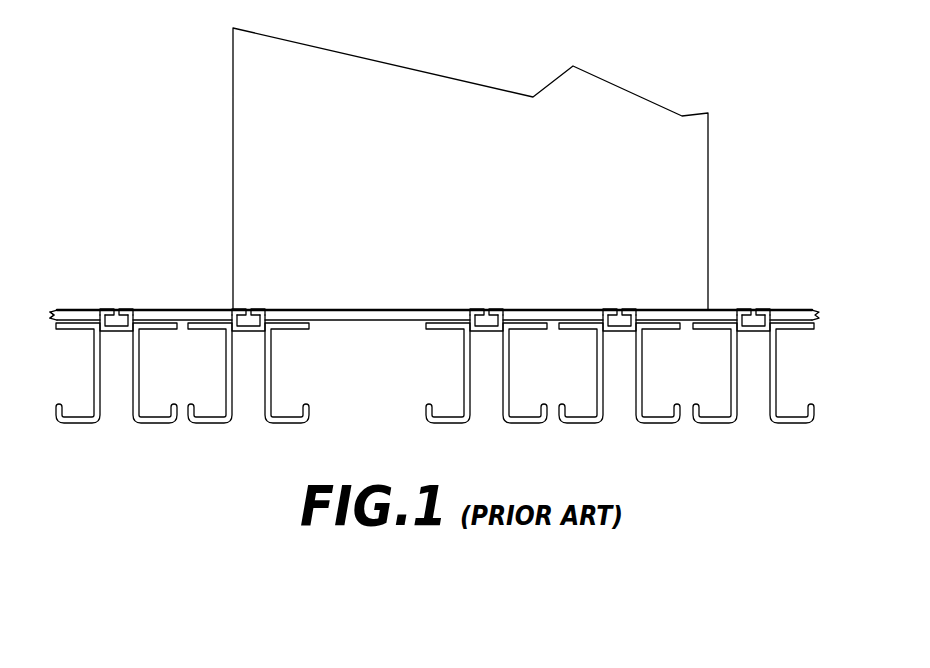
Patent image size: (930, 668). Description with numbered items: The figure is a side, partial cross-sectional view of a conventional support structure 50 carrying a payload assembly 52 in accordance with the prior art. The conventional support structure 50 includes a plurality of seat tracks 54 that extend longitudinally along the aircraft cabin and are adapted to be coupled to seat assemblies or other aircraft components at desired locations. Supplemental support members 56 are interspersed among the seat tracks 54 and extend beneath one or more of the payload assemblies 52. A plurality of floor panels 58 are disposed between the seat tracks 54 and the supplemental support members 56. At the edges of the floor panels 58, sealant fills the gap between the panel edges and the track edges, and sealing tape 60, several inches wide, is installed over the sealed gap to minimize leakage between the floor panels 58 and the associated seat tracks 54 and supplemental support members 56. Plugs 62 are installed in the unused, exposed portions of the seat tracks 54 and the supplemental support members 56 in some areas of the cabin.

The conventional support structure 50 is at (145, 147).
The payload assembly 52 is at (233, 72).
The seat track 54 is at (91, 378).
The supplemental support member 56 is at (274, 373).
The floor panel 58 is at (195, 309).
The sealing tape 60 is at (135, 309).
The plug 62 is at (248, 310).